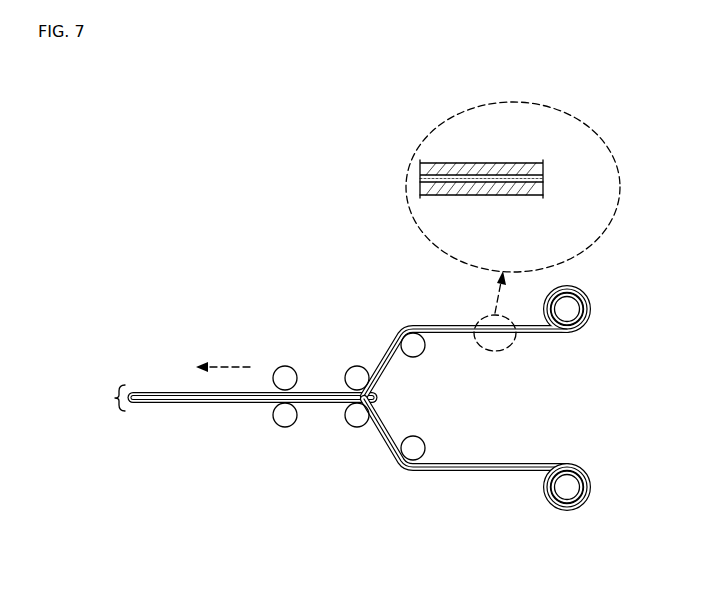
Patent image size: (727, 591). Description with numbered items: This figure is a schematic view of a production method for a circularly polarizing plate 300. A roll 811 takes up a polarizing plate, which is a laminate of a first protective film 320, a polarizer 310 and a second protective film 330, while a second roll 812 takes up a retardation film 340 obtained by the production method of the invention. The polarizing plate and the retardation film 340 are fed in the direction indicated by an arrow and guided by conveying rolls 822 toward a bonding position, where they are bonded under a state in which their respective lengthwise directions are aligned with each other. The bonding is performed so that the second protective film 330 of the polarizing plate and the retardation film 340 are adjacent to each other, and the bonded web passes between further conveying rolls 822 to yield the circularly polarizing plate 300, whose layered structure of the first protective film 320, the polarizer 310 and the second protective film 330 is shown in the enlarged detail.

The circularly polarizing plate 300 is at (225, 398).
The polarizer 310 is at (545, 178).
The first protective film 320 is at (490, 167).
The second protective film 330 is at (545, 190).
The retardation film 340 is at (540, 463).
The roll for taking up a polarizing plate 811 is at (568, 309).
The roll for taking up a retardation film 812 is at (568, 488).
The conveying roll 822 is at (355, 366).